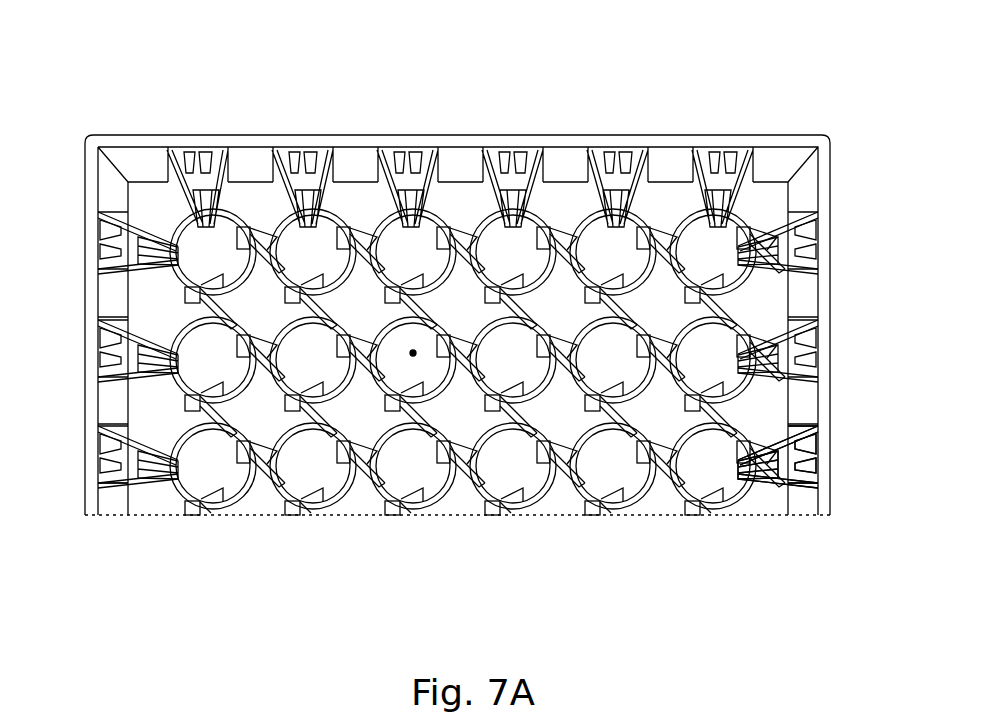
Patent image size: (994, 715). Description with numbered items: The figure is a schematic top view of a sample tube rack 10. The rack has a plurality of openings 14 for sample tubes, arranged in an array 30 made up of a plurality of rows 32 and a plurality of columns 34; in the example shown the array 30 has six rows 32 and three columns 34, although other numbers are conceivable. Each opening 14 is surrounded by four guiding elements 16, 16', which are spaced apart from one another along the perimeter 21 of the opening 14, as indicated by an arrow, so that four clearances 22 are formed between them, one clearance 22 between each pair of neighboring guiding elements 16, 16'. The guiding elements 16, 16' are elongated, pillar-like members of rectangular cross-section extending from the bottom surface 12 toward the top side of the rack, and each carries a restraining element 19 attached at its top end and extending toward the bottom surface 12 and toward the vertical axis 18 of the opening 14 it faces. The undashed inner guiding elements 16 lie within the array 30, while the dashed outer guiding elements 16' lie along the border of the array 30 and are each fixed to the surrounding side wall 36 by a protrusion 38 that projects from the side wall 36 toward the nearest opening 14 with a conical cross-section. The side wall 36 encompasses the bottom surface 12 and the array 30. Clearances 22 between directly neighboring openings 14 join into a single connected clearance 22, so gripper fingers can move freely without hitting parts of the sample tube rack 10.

The sample tube rack 10 is at (765, 100).
The bottom surface 12 is at (252, 290).
The opening 14 is at (711, 252).
The inner guiding element 16 is at (558, 160).
The outer guiding element 16' is at (481, 516).
The vertical axis 18 is at (410, 348).
The restraining element 19 is at (170, 514).
The perimeter 21 is at (450, 516).
The clearance 22 is at (622, 445).
The array 30 is at (143, 160).
The row 32 is at (205, 136).
The column 34 is at (88, 231).
The side wall 36 is at (90, 407).
The protrusion 38 is at (85, 447).